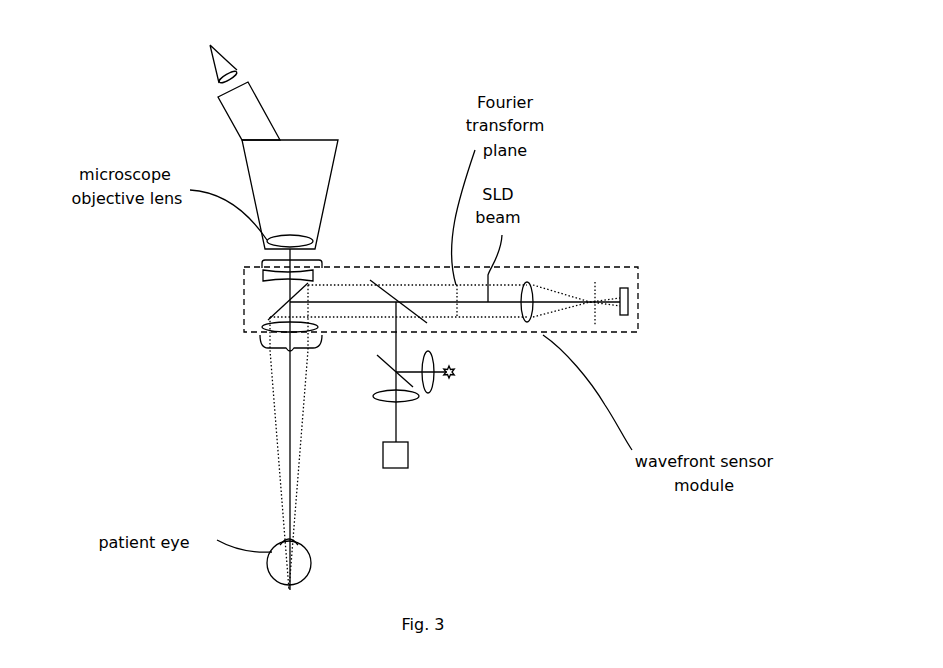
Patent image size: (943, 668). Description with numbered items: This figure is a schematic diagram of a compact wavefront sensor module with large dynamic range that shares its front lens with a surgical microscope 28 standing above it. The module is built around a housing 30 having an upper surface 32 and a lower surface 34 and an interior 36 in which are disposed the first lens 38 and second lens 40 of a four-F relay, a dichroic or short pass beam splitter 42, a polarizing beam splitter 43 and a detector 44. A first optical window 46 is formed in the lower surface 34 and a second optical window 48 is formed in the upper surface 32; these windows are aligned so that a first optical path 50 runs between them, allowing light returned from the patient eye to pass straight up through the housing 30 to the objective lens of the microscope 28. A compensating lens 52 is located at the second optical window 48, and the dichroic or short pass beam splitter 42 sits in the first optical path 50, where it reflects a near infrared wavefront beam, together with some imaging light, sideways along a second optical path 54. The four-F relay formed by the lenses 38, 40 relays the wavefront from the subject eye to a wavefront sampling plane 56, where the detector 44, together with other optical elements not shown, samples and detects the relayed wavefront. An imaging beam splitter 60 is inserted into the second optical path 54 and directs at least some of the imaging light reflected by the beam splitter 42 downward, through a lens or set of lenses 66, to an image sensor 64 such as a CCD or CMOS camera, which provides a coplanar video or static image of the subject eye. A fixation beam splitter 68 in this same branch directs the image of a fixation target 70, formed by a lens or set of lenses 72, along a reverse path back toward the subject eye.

The surgical microscope 28 is at (272, 194).
The housing 30 is at (640, 252).
The upper surface 32 is at (355, 267).
The lower surface 34 is at (610, 335).
The interior 36 is at (554, 294).
The first lens 38 is at (262, 328).
The second lens 40 is at (525, 287).
The dichroic or short pass beam splitter 42 is at (270, 320).
The polarizing beam splitter 43 is at (465, 325).
The detector 44 is at (621, 317).
The first optical window 46 is at (262, 337).
The second optical window 48 is at (317, 262).
The first optical path 50 is at (290, 293).
The compensating lens 52 is at (260, 267).
The second optical path 54 is at (434, 302).
The wavefront sampling plane 56 is at (595, 282).
The imaging beam splitter 60 is at (393, 283).
The image sensor 64 is at (395, 470).
The lens or set of lenses 66 is at (410, 400).
The fixation beam splitter 68 is at (387, 363).
The fixation target 70 is at (453, 377).
The lens or set of lenses 72 is at (433, 357).